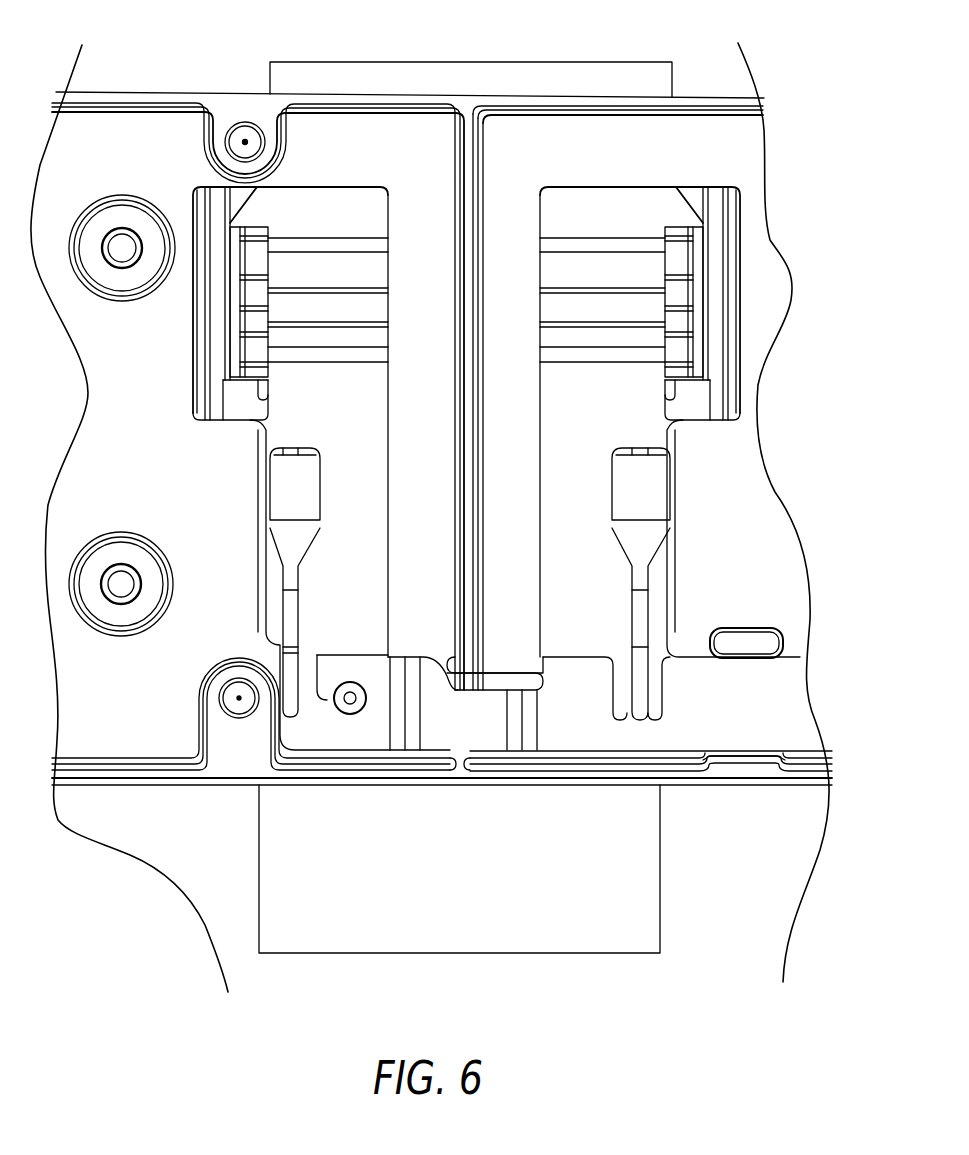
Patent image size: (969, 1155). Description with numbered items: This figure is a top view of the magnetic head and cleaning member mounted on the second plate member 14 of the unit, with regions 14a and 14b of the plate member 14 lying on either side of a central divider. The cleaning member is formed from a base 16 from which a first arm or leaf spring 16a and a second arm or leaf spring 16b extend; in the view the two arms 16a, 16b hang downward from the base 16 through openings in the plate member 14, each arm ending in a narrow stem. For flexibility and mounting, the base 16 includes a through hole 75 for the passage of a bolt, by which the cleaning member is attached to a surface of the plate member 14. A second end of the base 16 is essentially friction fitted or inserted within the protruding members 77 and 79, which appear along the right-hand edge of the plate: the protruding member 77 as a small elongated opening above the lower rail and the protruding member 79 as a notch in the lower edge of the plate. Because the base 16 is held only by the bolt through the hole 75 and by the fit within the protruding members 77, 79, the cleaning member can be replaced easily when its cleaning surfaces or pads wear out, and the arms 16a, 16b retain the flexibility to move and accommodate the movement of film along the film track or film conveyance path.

The second plate member 14 is at (528, 146).
The first connector 14a is at (712, 370).
The second connector 14b is at (368, 272).
The base 16 is at (580, 732).
The first arm or leaf spring 16a is at (647, 499).
The second arm or leaf spring 16b is at (307, 487).
The through hole 75 is at (350, 697).
The protruding member 77 is at (748, 645).
The protruding member 79 is at (738, 757).